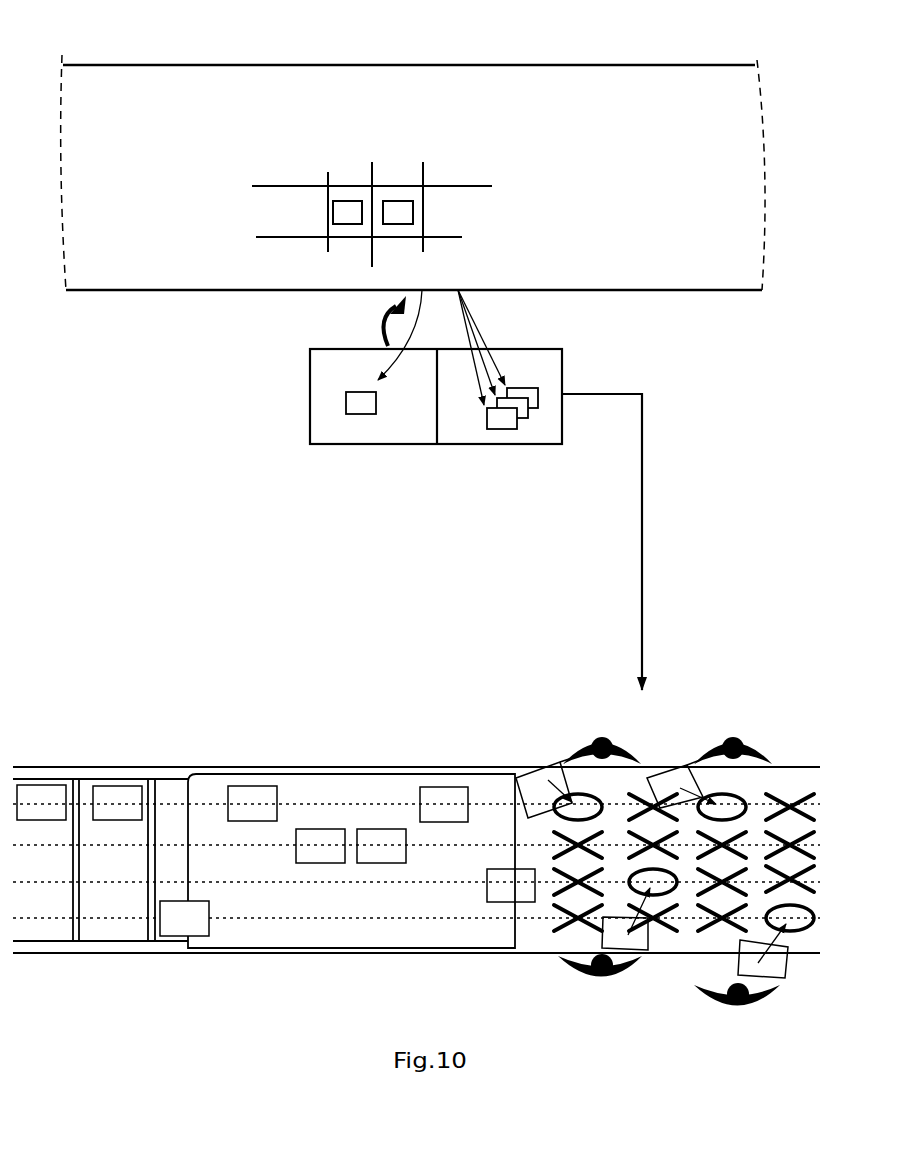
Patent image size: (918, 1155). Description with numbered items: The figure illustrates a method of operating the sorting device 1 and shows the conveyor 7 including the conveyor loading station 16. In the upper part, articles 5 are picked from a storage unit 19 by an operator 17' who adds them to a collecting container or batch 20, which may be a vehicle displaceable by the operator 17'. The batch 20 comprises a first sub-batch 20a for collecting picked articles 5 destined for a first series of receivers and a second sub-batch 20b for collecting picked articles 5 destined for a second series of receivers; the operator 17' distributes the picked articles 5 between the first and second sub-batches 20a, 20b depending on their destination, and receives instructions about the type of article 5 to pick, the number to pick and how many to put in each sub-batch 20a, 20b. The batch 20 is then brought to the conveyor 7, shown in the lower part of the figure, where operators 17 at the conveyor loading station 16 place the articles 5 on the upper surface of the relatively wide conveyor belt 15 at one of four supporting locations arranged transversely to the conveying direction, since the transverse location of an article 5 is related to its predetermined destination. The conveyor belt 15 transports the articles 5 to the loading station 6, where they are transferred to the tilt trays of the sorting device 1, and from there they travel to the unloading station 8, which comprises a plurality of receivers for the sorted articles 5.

The sorting device 1 is at (172, 1002).
The article 5 is at (350, 212).
The loading station 6 is at (153, 749).
The conveyor 7 is at (284, 786).
The unloading station 8 is at (150, 748).
The conveyor belt 15 is at (325, 942).
The conveyor loading station 16 is at (571, 1014).
The operator 17 is at (652, 863).
The operator 17' is at (330, 321).
The storage unit 19 is at (490, 88).
The batch 20 is at (305, 375).
The first sub-batch 20a is at (541, 428).
The second sub-batch 20b is at (403, 430).